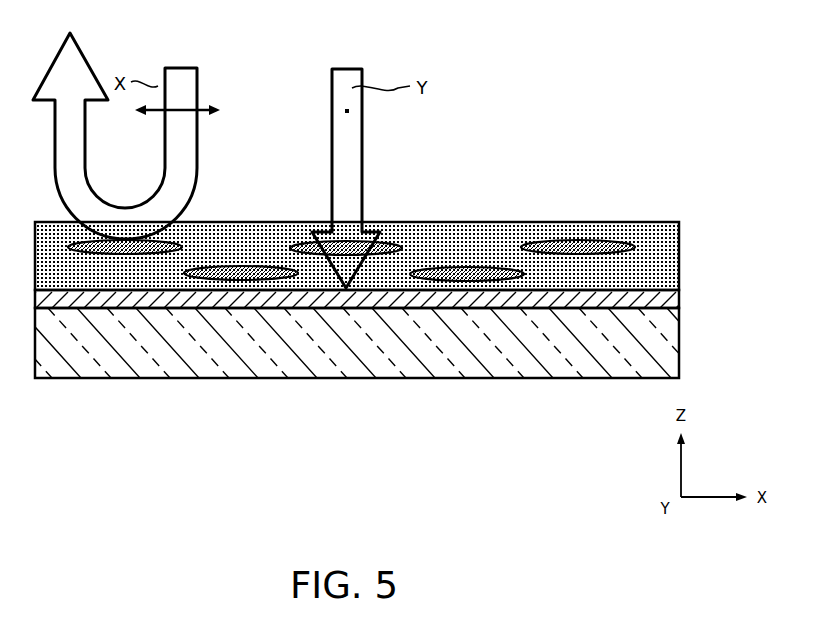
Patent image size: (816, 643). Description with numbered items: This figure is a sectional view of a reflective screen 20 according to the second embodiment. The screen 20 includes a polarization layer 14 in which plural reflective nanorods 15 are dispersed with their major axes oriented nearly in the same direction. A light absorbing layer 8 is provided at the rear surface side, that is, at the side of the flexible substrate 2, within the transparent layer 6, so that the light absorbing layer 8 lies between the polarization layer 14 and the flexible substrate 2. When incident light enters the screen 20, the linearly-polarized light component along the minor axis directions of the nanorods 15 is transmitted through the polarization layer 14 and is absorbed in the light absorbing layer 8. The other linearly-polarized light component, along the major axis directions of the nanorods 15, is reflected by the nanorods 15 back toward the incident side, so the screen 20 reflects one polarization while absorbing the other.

The reflective screen 20 is at (657, 166).
The transparent layer 6 is at (492, 232).
The polarization layer 14 is at (665, 257).
The reflective nanorods 15 is at (597, 238).
The light absorbing layer 8 is at (672, 300).
The flexible substrate 2 is at (669, 335).